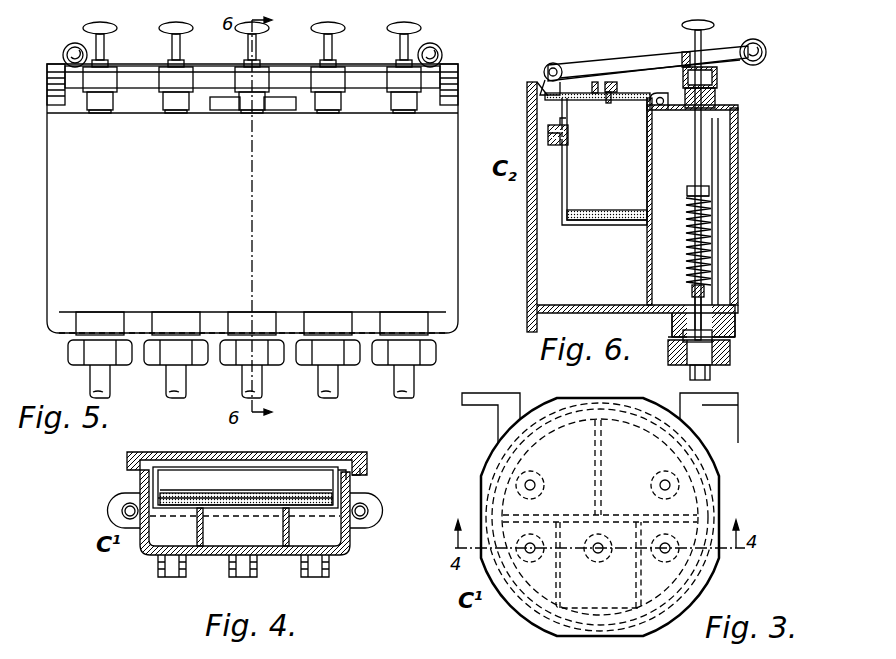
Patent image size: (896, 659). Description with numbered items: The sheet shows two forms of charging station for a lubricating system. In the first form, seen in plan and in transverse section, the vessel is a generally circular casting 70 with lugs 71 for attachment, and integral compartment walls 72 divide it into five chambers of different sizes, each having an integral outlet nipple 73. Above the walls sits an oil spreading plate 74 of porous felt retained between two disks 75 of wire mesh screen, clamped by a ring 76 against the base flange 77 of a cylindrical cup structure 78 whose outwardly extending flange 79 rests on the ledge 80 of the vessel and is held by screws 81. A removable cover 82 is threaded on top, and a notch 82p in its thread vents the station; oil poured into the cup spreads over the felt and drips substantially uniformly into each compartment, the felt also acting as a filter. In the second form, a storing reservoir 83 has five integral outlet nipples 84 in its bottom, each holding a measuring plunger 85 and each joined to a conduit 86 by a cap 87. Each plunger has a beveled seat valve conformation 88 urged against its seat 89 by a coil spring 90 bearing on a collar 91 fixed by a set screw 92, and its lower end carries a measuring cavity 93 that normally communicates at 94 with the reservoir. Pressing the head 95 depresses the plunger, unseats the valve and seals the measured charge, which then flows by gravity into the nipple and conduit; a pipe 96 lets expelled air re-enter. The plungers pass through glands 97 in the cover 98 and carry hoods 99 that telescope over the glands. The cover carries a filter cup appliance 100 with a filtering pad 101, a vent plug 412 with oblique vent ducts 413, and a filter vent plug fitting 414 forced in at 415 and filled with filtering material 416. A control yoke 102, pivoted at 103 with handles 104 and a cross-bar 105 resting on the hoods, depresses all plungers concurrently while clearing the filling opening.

In FIG. 4, the casting 70 is at (245, 512).
In FIG. 3, the casting 70 is at (700, 564).
In FIG. 4, the lugs 71 is at (376, 516).
In FIG. 3, the lugs 71 is at (740, 399).
In FIG. 3, the compartment walls 72 is at (600, 538).
In FIG. 4, the outlet nipple 73 is at (330, 575).
In FIG. 3, the outlet nipple 73 is at (597, 516).
In FIG. 5, the oil spreading plate 74 is at (253, 103).
In FIG. 4, the oil spreading plate 74 is at (250, 490).
In FIG. 4, the disks of wire mesh screen 75 is at (255, 498).
In FIG. 4, the ring 76 is at (332, 498).
In FIG. 4, the base flange 77 is at (330, 500).
In FIG. 4, the cylindrical cup structure 78 is at (338, 468).
In FIG. 4, the outwardly extending flange 79 is at (352, 462).
In FIG. 4, the ledge 80 is at (352, 478).
In FIG. 4, the screws 81 is at (138, 478).
In FIG. 4, the removable cover 82 is at (130, 458).
In FIG. 4, the notch 82p is at (368, 460).
In FIG. 6, the storing reservoir 83 is at (527, 232).
In FIG. 6, the outlet nipples 84 is at (672, 330).
In FIG. 6, the measuring plunger 85 is at (688, 305).
In FIG. 6, the conduit 86 is at (711, 376).
In FIG. 6, the cap 87 is at (731, 356).
In FIG. 6, the beveled seat valve conformation 88 is at (712, 338).
In FIG. 6, the seat 89 is at (668, 322).
In FIG. 6, the coil spring 90 is at (687, 226).
In FIG. 6, the collar 91 is at (688, 191).
In FIG. 6, the set screw 92 is at (703, 188).
In FIG. 6, the measuring cavity 93 is at (714, 320).
In FIG. 6, the communication opening 94 is at (706, 293).
In FIG. 6, the head 95 is at (716, 26).
In FIG. 6, the pipe 96 is at (735, 205).
In FIG. 6, the glands 97 is at (717, 100).
In FIG. 6, the cover 98 is at (680, 112).
In FIG. 6, the hood 99 is at (718, 78).
In FIG. 6, the filter cup appliance 100 is at (568, 172).
In FIG. 6, the filtering pad 101 is at (610, 226).
In FIG. 5, the control yoke 102 is at (252, 77).
In FIG. 6, the control yoke 102 is at (582, 72).
In FIG. 6, the pivot 103 is at (546, 66).
In FIG. 5, the handles 104 is at (66, 47).
In FIG. 6, the handles 104 is at (542, 66).
In FIG. 6, the cross-bar 105 is at (682, 58).
In FIG. 6, the vent plug 412 is at (618, 88).
In FIG. 6, the oblique vent ducts 413 is at (595, 82).
In FIG. 6, the filter vent plug fitting 414 is at (548, 129).
In FIG. 6, the press fit 415 is at (568, 146).
In FIG. 6, the filtering material 416 is at (568, 138).